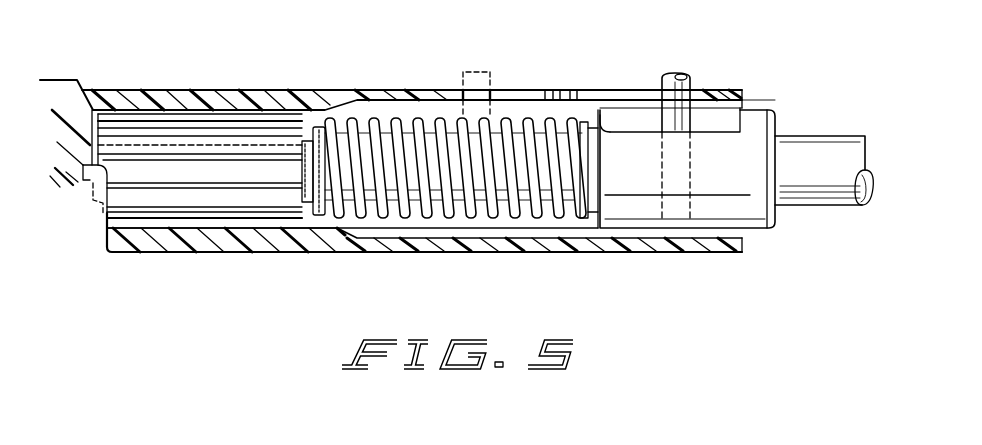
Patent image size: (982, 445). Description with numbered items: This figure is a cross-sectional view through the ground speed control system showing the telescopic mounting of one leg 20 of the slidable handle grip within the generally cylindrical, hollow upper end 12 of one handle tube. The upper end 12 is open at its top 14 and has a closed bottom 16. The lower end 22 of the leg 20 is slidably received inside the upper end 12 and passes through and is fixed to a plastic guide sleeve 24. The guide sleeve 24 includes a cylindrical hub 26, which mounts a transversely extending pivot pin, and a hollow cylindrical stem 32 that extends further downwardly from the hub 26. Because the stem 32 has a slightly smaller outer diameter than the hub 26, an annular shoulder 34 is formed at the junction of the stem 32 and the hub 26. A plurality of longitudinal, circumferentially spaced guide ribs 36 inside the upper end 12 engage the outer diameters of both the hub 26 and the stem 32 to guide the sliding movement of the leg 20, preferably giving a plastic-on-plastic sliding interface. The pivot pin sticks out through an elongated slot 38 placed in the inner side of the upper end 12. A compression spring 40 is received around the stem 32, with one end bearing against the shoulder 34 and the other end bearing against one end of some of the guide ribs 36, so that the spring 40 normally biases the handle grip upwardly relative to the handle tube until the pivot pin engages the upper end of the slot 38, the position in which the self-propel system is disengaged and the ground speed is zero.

The upper end 12 is at (183, 92).
The top 14 is at (743, 97).
The closed bottom 16 is at (97, 130).
The leg 20 is at (822, 138).
The lower end 22 is at (297, 173).
The guide sleeve 24 is at (627, 158).
The cylindrical hub 26 is at (750, 207).
The stem 32 is at (343, 223).
The annular shoulder 34 is at (573, 210).
The guide ribs 36 is at (214, 120).
The elongated slot 38 is at (523, 86).
The compression spring 40 is at (383, 118).